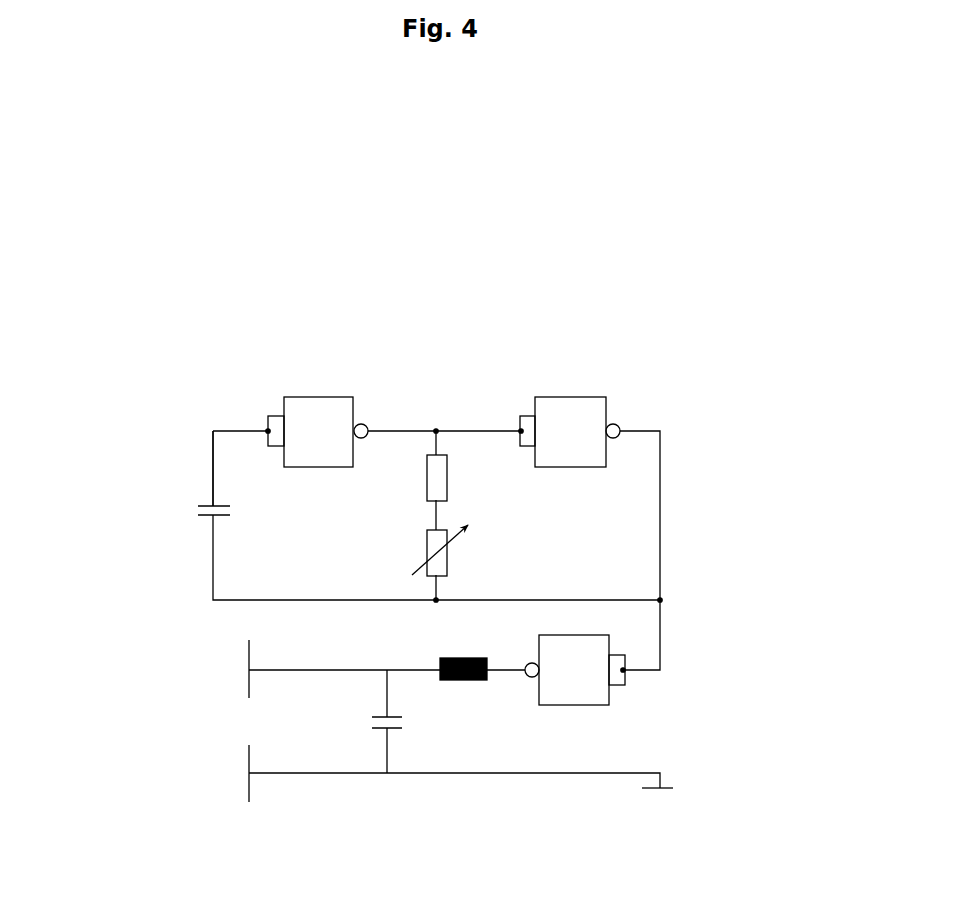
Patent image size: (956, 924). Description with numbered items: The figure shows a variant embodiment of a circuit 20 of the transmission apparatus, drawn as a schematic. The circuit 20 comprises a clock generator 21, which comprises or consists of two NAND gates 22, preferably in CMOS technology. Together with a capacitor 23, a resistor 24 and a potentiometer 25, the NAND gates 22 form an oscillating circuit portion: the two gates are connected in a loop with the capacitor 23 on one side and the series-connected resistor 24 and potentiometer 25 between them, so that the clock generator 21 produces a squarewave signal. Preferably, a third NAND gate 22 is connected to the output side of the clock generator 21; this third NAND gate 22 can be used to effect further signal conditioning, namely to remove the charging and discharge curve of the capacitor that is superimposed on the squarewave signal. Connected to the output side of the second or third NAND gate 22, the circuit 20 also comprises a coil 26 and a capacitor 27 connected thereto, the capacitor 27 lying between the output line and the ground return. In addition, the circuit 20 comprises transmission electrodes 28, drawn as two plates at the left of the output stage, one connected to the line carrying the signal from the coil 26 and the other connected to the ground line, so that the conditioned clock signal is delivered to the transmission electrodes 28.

The circuit 20 is at (655, 365).
The clock generator 21 is at (195, 442).
The NAND gate 22 is at (325, 383).
The capacitor 23 is at (195, 507).
The resistor 24 is at (492, 492).
The potentiometer 25 is at (492, 550).
The coil 26 is at (462, 688).
The capacitor 27 is at (367, 725).
The transmission electrodes 28 is at (233, 668).